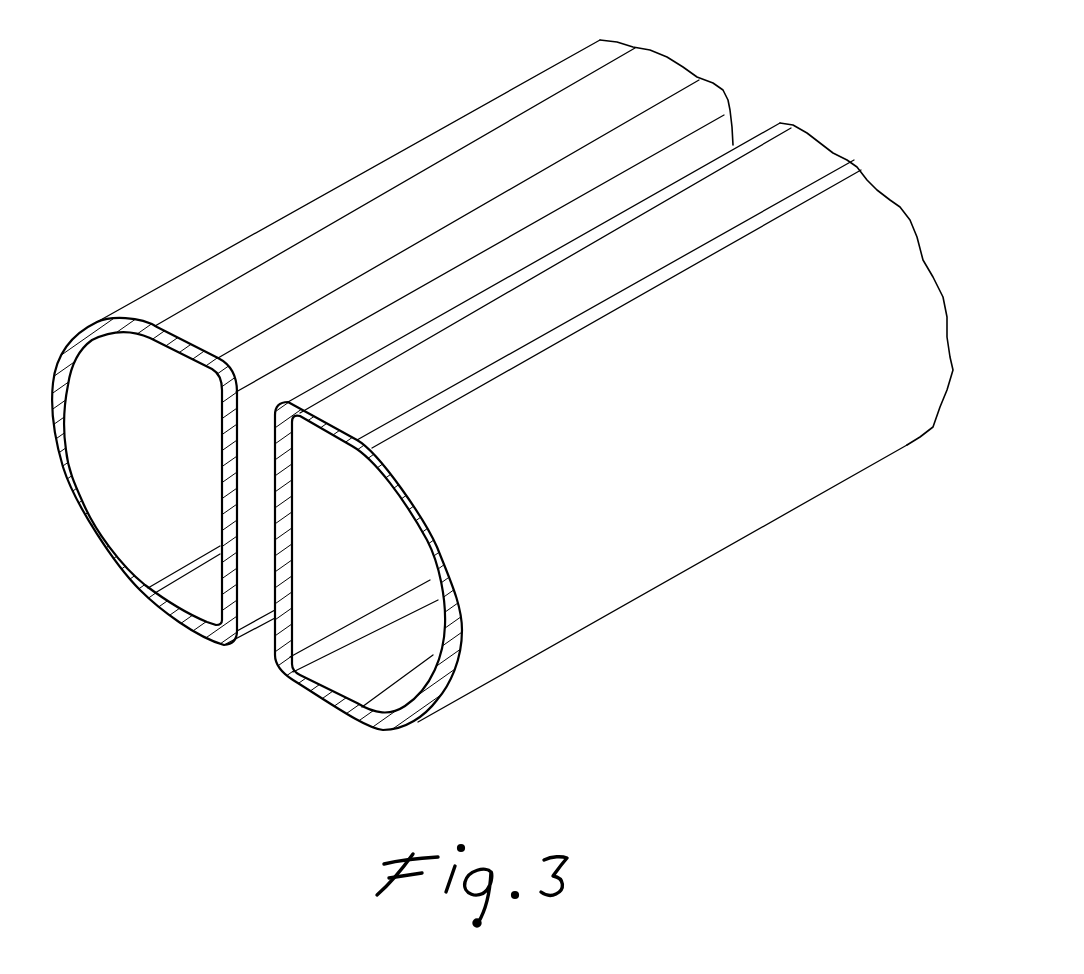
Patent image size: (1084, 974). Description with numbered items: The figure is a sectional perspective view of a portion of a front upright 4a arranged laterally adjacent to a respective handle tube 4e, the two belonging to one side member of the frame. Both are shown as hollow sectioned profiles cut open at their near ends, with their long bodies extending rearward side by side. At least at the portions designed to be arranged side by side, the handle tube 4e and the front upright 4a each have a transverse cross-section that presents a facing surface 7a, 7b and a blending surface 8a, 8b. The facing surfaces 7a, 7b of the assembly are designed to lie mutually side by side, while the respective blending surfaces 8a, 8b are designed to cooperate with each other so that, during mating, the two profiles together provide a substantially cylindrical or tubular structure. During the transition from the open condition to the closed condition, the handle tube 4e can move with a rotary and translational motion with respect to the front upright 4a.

The front upright 4a is at (612, 492).
The handle tube 4e is at (391, 409).
The facing surface 7a is at (293, 529).
The facing surface 7b is at (222, 473).
The blending surface 8a is at (592, 557).
The blending surface 8b is at (367, 167).